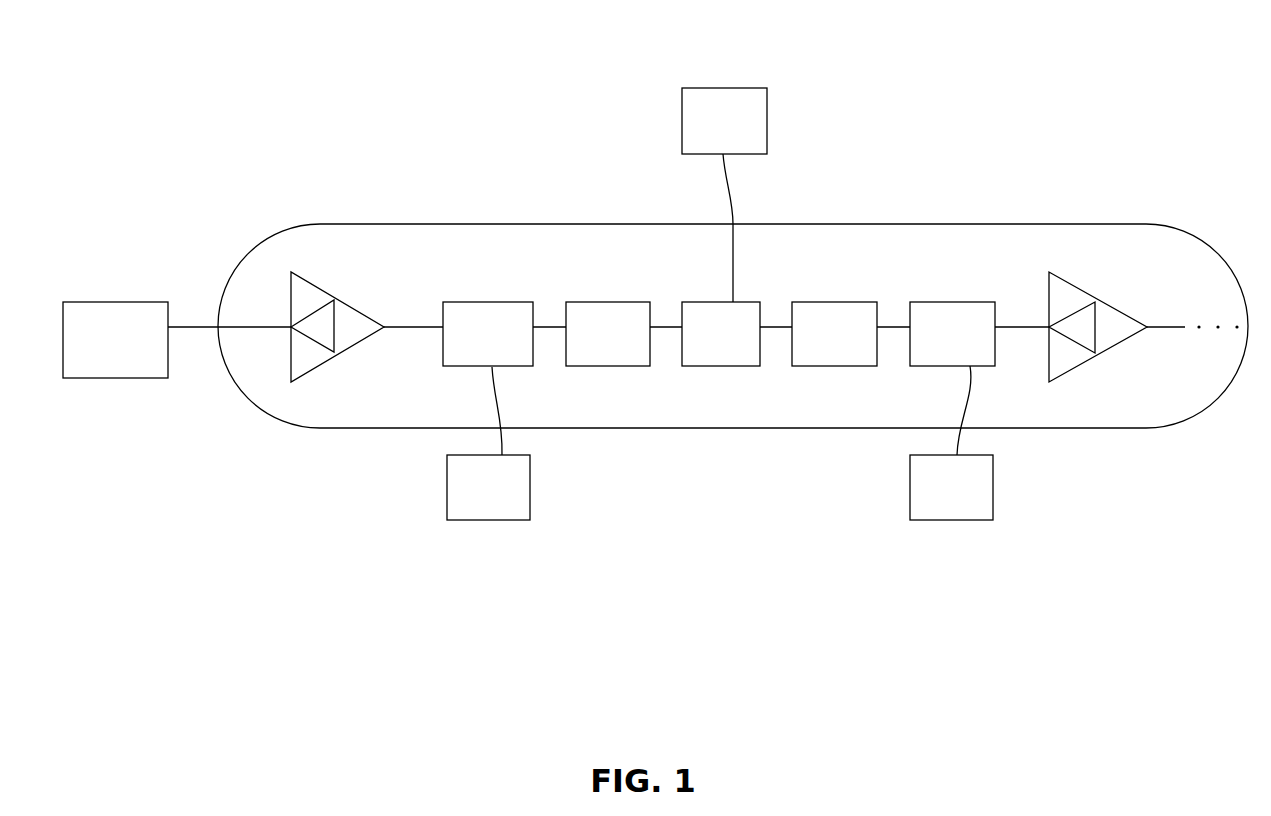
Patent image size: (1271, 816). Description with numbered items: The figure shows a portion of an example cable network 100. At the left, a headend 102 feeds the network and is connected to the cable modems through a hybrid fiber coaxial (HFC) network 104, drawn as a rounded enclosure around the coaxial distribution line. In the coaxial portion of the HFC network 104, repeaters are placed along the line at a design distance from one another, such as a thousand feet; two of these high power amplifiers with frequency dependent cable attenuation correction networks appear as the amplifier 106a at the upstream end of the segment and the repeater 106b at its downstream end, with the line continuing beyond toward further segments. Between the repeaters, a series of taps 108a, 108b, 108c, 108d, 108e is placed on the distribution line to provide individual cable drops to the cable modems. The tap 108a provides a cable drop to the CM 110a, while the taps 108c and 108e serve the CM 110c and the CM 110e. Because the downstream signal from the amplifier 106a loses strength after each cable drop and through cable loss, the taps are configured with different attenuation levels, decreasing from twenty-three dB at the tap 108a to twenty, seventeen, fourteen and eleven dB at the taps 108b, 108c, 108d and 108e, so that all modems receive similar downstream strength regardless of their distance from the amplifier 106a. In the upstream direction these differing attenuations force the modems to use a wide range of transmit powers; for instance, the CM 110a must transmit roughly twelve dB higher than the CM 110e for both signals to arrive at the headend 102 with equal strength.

The cable network 100 is at (1178, 34).
The headend 102 is at (123, 302).
The hybrid fiber coaxial (HFC) network 104 is at (432, 224).
The amplifier 106a is at (335, 300).
The repeater 106b is at (1088, 294).
The tap 108a is at (495, 302).
The tap 108b is at (615, 302).
The tap 108c is at (711, 367).
The tap 108d is at (843, 302).
The tap 108e is at (958, 302).
The cable modem (CM) 110a is at (459, 521).
The cable modem (CM) 110c is at (727, 88).
The cable modem (CM) 110e is at (948, 521).